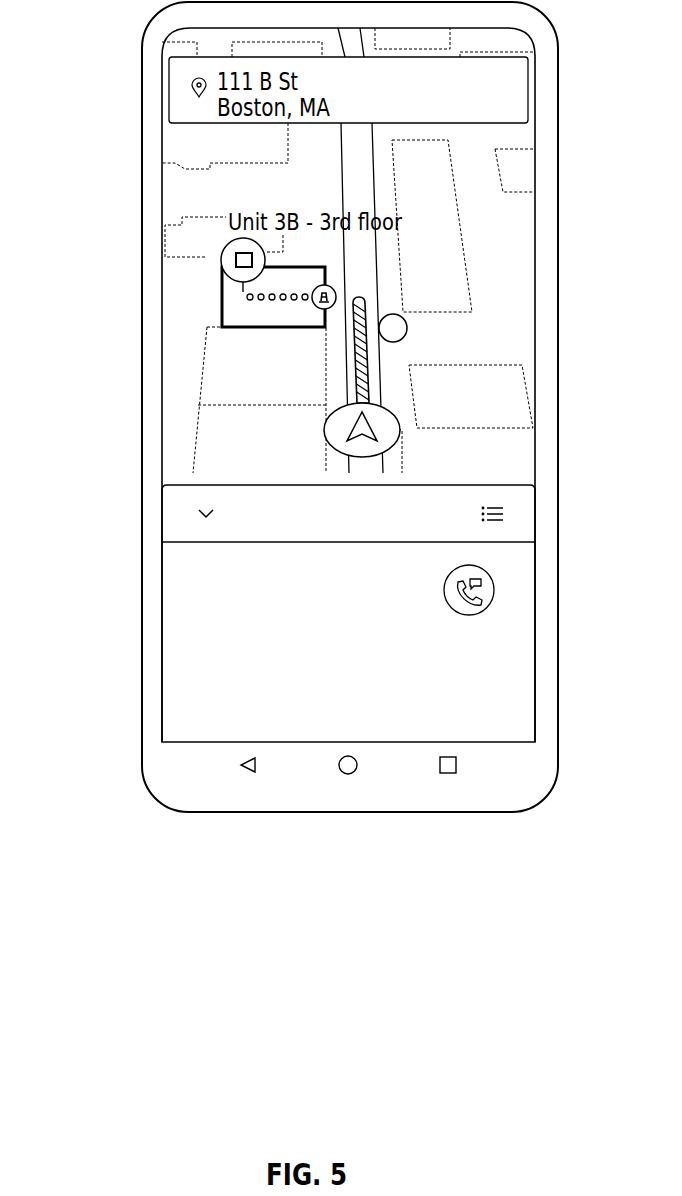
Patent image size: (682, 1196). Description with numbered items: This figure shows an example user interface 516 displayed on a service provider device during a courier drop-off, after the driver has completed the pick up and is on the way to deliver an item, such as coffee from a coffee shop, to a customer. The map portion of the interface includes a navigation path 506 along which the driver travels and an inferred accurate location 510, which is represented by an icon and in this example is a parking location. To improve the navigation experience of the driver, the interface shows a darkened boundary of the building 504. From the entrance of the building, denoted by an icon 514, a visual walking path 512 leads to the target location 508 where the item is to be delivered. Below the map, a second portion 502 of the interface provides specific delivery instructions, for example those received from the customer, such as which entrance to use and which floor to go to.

The second portion 502 is at (162, 565).
The building 504 is at (222, 302).
The navigation path 506 is at (357, 360).
The target location 508 is at (222, 256).
The inferred accurate location 510 is at (407, 329).
The visual walking path 512 is at (246, 296).
The icon 514 is at (336, 297).
The user interface 516 is at (142, 83).